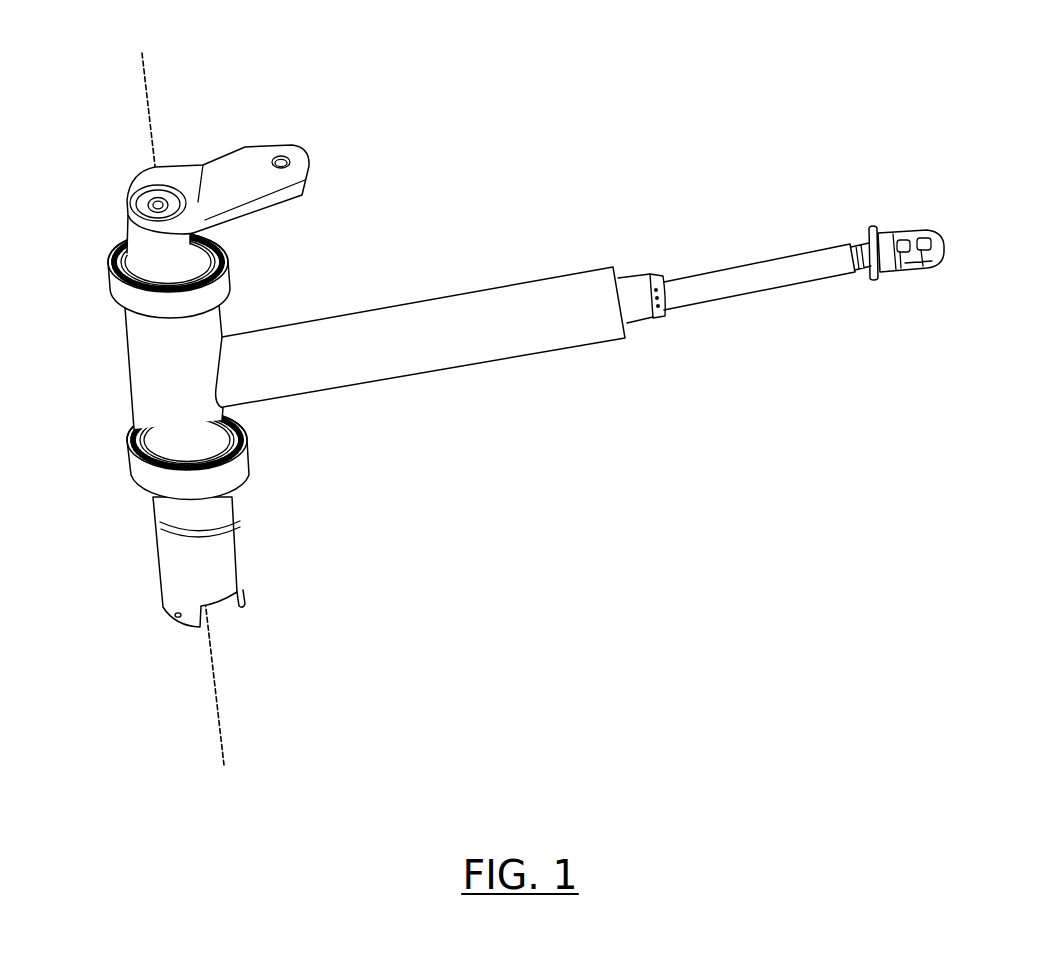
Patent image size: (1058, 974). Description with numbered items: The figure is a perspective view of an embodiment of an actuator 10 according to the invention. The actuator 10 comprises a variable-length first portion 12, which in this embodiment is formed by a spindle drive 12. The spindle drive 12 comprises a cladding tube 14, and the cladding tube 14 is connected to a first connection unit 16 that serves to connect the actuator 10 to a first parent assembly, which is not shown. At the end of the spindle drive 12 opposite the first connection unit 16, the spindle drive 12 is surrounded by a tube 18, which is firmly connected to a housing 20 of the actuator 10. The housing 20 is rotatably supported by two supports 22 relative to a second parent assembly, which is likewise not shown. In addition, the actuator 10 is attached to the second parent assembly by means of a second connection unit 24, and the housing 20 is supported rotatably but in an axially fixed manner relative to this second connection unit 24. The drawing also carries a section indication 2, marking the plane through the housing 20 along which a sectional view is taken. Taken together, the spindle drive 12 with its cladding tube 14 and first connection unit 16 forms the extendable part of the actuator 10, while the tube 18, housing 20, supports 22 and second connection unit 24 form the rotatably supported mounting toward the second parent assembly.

The section line 2- 2 is at (142, 53).
The actuator 10 is at (503, 386).
The spindle drive 12 is at (583, 292).
The cladding tube 14 is at (773, 275).
The first connection unit 16 is at (917, 232).
The tube 18 is at (345, 368).
The housing 20 is at (155, 397).
The supports 22 is at (133, 307).
The second connection unit 24 is at (258, 162).